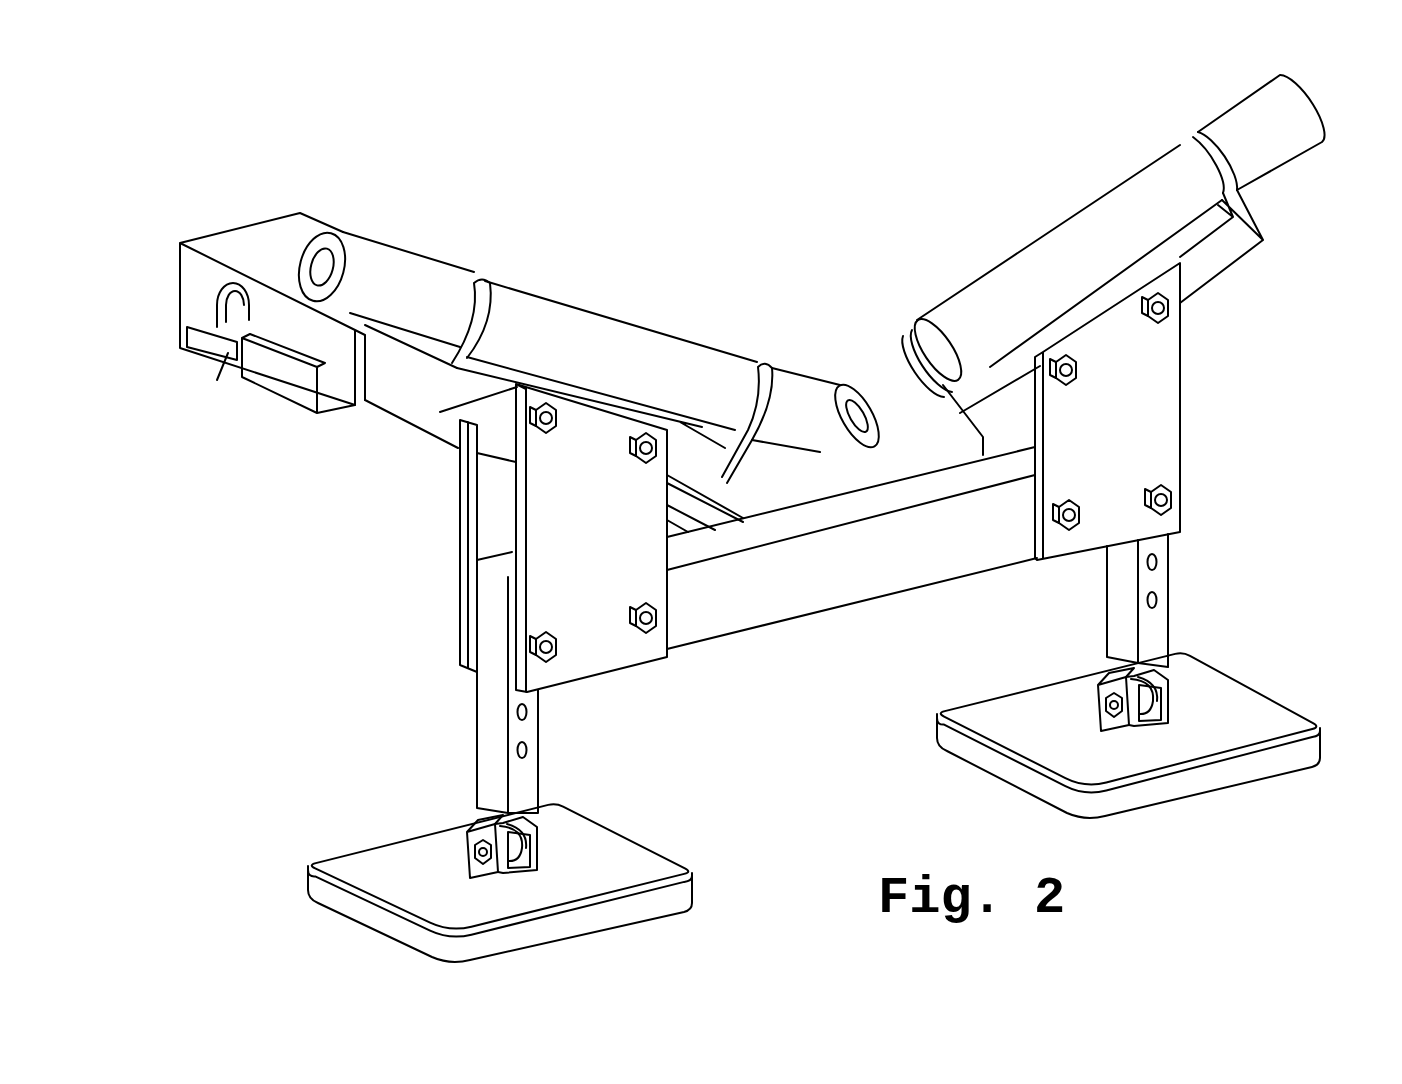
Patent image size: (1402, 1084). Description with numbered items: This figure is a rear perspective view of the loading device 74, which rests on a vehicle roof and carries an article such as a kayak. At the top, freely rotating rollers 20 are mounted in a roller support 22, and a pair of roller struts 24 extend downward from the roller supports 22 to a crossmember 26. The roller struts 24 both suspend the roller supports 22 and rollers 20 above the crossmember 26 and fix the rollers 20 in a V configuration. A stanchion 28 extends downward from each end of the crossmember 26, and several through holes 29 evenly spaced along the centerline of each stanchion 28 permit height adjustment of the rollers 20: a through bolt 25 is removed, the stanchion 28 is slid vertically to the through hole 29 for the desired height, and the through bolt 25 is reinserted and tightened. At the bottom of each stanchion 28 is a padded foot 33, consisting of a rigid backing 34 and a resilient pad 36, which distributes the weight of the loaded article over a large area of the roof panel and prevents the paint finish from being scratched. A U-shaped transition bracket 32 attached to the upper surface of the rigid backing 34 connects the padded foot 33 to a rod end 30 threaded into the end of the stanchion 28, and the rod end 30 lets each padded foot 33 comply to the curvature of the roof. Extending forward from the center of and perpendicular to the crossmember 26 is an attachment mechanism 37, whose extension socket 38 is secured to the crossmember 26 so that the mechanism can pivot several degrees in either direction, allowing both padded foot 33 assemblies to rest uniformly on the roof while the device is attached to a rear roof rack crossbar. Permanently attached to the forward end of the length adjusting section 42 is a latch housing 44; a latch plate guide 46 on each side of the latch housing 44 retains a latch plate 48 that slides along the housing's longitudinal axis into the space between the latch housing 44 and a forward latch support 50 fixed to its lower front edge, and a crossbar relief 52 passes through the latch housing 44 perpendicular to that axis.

The rollers 20 is at (403, 250).
The roller support 22 is at (1263, 238).
The roller struts 24 is at (518, 540).
The through bolt 25 is at (540, 646).
The crossmember 26 is at (893, 562).
The stanchion 28 is at (533, 737).
The through holes 29 is at (516, 750).
The rod end 30 is at (522, 840).
The transition bracket 32 is at (472, 828).
The padded foot 33 is at (338, 862).
The rigid backing 34 is at (668, 872).
The resilient pad 36 is at (670, 906).
The attachment mechanism 37 is at (380, 417).
The extension socket 38 is at (773, 482).
The length adjusting section 42 is at (423, 430).
The latch housing 44 is at (305, 222).
The latch plate guide 46 is at (300, 397).
The latch plate 48 is at (228, 353).
The forward latch support 50 is at (202, 353).
The crossbar relief 52 is at (217, 288).
The loading device 74 is at (722, 606).